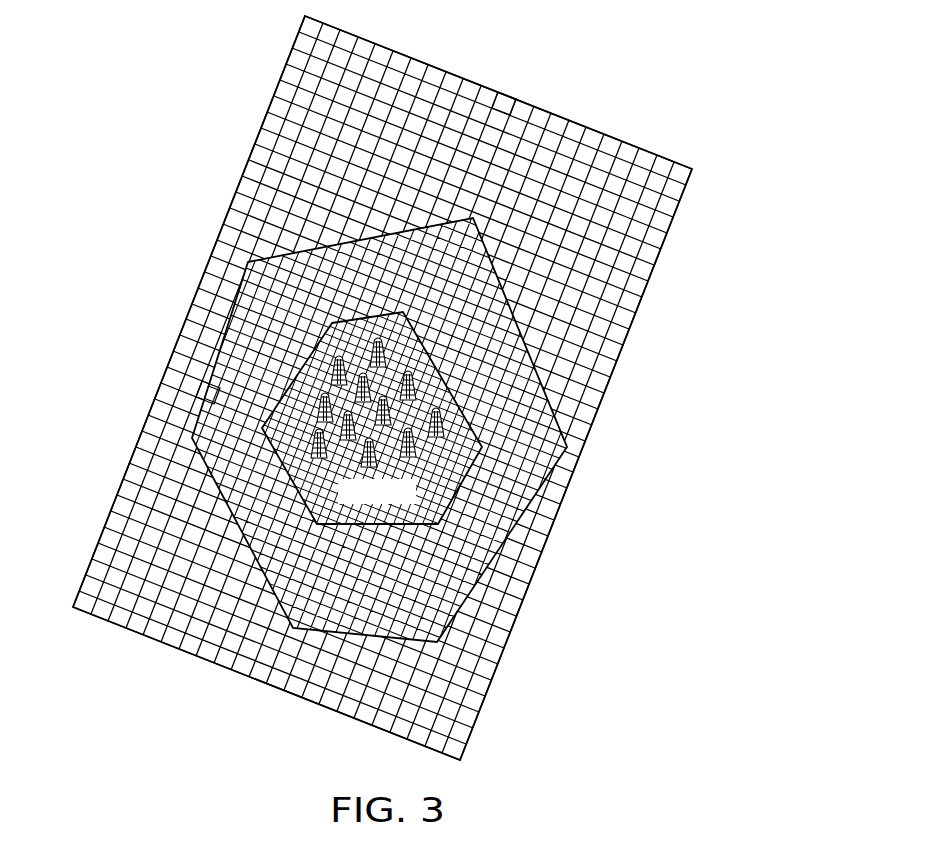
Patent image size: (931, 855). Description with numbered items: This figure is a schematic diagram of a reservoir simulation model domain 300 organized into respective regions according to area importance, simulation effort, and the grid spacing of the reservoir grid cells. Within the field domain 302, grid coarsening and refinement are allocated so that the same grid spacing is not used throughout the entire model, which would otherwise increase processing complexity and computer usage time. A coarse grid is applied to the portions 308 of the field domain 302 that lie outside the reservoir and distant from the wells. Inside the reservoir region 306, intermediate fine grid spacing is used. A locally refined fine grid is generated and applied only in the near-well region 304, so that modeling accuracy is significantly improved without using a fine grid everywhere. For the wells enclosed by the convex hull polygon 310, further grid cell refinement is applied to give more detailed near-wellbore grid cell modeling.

The simulation model domain 300 is at (88, 110).
The field domain 302 is at (564, 92).
The near-well region 304 is at (210, 392).
The reservoir region 306 is at (216, 288).
The portions of field domain 308 is at (511, 104).
The convex hull polygon 310 is at (470, 507).